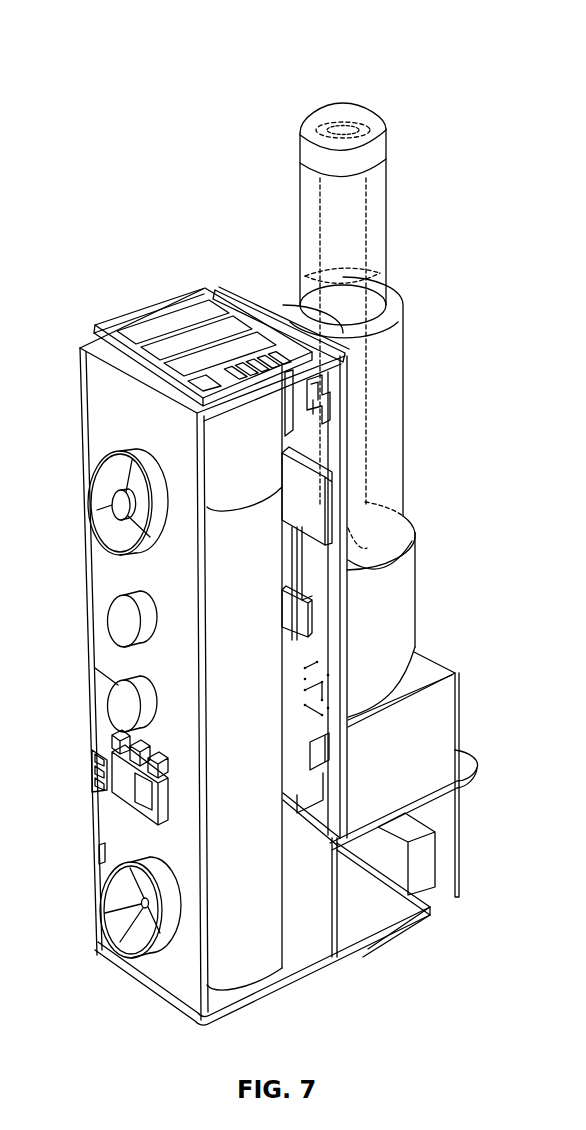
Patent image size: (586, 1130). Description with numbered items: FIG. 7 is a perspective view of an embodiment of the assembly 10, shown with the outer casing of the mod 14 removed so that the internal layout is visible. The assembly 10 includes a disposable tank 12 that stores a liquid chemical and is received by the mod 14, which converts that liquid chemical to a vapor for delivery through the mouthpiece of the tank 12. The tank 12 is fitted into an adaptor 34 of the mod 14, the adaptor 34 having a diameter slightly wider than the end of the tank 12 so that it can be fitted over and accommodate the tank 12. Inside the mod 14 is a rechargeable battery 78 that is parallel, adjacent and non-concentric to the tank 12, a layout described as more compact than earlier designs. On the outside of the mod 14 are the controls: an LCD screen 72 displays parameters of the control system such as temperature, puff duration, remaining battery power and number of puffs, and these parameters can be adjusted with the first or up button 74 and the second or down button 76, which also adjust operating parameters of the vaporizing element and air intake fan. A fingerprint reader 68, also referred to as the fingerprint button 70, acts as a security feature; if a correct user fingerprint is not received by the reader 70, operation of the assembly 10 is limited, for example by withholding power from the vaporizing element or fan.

The assembly 10 is at (430, 72).
The disposable tank 12 is at (307, 218).
The mod 14 is at (458, 738).
The adaptor 34 is at (395, 602).
The fingerprint reader 68 is at (110, 895).
The fingerprint button 70 is at (103, 490).
The LCD screen 72 is at (157, 305).
The first button 74 is at (125, 623).
The second button 76 is at (125, 708).
The rechargeable battery 78 is at (255, 912).